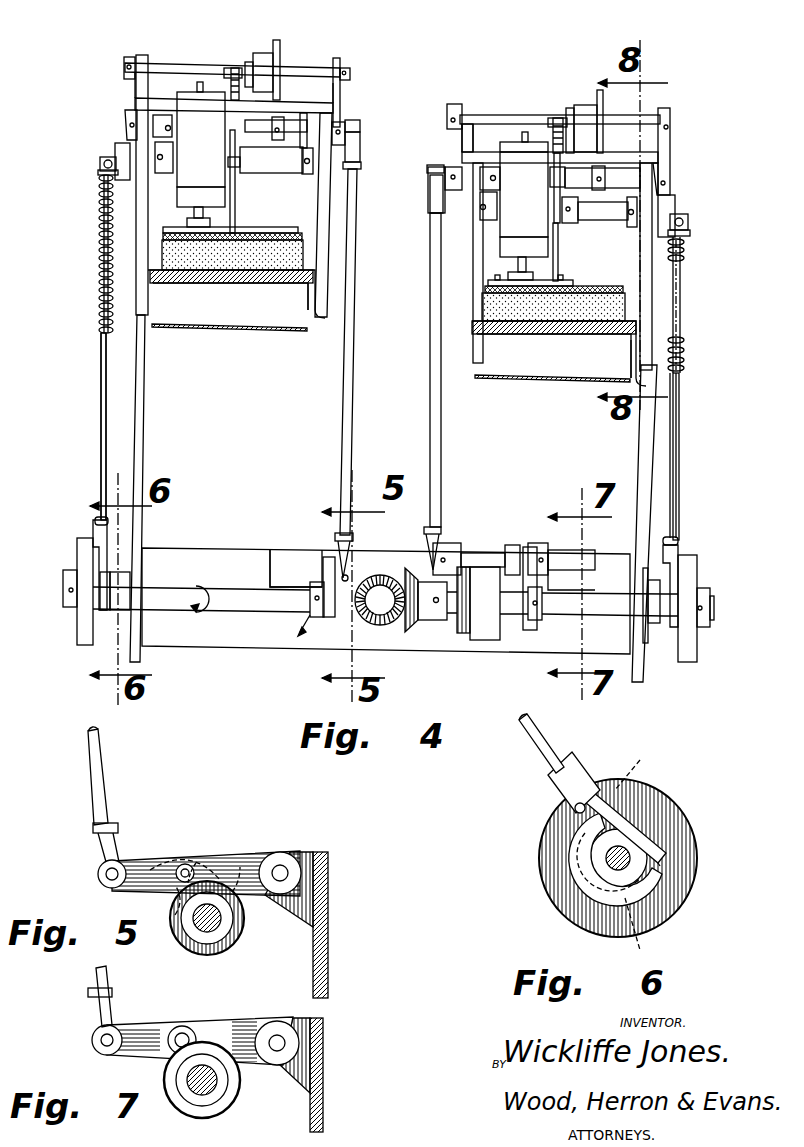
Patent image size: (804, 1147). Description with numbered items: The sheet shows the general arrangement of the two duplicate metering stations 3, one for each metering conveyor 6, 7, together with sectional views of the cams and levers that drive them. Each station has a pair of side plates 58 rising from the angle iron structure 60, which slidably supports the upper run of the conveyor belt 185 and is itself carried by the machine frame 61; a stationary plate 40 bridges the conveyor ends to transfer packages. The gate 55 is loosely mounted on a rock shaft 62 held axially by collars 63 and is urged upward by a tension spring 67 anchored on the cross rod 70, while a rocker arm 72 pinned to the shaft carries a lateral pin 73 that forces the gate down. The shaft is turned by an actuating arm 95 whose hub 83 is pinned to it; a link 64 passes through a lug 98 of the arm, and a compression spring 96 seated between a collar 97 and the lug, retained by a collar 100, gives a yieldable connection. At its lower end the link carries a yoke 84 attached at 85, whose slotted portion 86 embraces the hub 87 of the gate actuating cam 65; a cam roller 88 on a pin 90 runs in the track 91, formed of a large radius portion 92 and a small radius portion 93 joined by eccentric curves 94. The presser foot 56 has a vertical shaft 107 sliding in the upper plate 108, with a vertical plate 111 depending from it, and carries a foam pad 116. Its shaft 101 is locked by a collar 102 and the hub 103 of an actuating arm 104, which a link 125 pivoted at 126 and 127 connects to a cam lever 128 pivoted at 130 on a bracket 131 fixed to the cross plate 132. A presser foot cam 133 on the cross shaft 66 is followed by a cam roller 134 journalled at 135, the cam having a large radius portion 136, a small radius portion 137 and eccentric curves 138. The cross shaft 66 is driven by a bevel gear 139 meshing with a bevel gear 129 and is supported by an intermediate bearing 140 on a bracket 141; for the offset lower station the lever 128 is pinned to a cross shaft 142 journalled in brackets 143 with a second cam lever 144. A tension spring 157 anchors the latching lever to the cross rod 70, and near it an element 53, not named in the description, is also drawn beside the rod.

In FIG. 4, the metering station 3 is at (192, 62).
In FIG. 4, the metering conveyor 6 is at (263, 292).
In FIG. 4, the metering conveyor 7 is at (523, 342).
In FIG. 4, the stationary plate 40 is at (302, 262).
In FIG. 4, the cylinder 53 is at (272, 53).
In FIG. 4, the gate 55 is at (236, 215).
In FIG. 4, the presser foot 56 is at (497, 275).
In FIG. 4, the side plate 58 is at (142, 236).
In FIG. 4, the angle iron structure 60 is at (312, 310).
In FIG. 4, the frame 61 is at (148, 467).
In FIG. 4, the rock shaft 62 is at (598, 214).
In FIG. 4, the collar 63 is at (165, 173).
In FIG. 4, the link 64 is at (100, 400).
In FIG. 6, the link 64 is at (538, 723).
In FIG. 4, the gate actuating cam 65 is at (78, 633).
In FIG. 6, the gate actuating cam 65 is at (686, 903).
In FIG. 4, the cross shaft 66 is at (252, 600).
In FIG. 5, the cross shaft 66 is at (194, 932).
In FIG. 7, the cross shaft 66 is at (188, 1092).
In FIG. 6, the cross shaft 66 is at (662, 913).
In FIG. 4, the tension spring 67 is at (237, 65).
In FIG. 4, the cross rod 70 is at (301, 72).
In FIG. 4, the rocker arm 72 is at (564, 224).
In FIG. 4, the lateral pin 73 is at (228, 163).
In FIG. 4, the hub 83 is at (120, 146).
In FIG. 4, the yoke 84 is at (673, 570).
In FIG. 6, the yoke 84 is at (555, 797).
In FIG. 4, the attachment 85 is at (678, 547).
In FIG. 6, the attachment 85 is at (572, 760).
In FIG. 6, the slotted portion 86 is at (630, 810).
In FIG. 6, the hub 87 is at (648, 868).
In FIG. 6, the cam roller 88 is at (570, 850).
In FIG. 6, the pin 90 is at (575, 808).
In FIG. 6, the track 91 is at (582, 898).
In FIG. 6, the large radius portion 92 is at (570, 873).
In FIG. 6, the small radius portion 93 is at (655, 840).
In FIG. 6, the eccentric curve 94 is at (627, 854).
In FIG. 4, the actuating arm 95 is at (106, 152).
In FIG. 4, the compression spring 96 is at (100, 250).
In FIG. 4, the collar 97 is at (680, 375).
In FIG. 4, the lug 98 is at (98, 172).
In FIG. 4, the collar 100 is at (102, 163).
In FIG. 4, the shaft 101 is at (300, 128).
In FIG. 4, the collar 102 is at (128, 112).
In FIG. 4, the hub 103 is at (342, 117).
In FIG. 4, the actuating arm 104 is at (350, 125).
In FIG. 4, the vertical shaft 107 is at (195, 86).
In FIG. 4, the upper plate 108 is at (484, 154).
In FIG. 4, the vertical plate 111 is at (524, 206).
In FIG. 4, the pad 116 is at (302, 239).
In FIG. 4, the link 125 is at (350, 373).
In FIG. 5, the link 125 is at (103, 751).
In FIG. 7, the link 125 is at (96, 972).
In FIG. 4, the pivot connection 126 is at (360, 135).
In FIG. 4, the pivot connection 127 is at (352, 566).
In FIG. 5, the pivot connection 127 is at (98, 876).
In FIG. 7, the pivot connection 127 is at (92, 1041).
In FIG. 4, the cam lever 128 is at (333, 613).
In FIG. 5, the cam lever 128 is at (238, 860).
In FIG. 7, the cam lever 128 is at (144, 1037).
In FIG. 4, the bevel gear 129 is at (372, 630).
In FIG. 5, the pivot 130 is at (282, 867).
In FIG. 4, the bracket 131 is at (306, 548).
In FIG. 5, the bracket 131 is at (310, 854).
In FIG. 4, the cross plate 132 is at (285, 640).
In FIG. 5, the cross plate 132 is at (328, 942).
In FIG. 7, the cross plate 132 is at (320, 1067).
In FIG. 4, the presser foot cam 133 is at (310, 630).
In FIG. 5, the presser foot cam 133 is at (238, 934).
In FIG. 7, the presser foot cam 133 is at (230, 1111).
In FIG. 4, the cam roller 134 is at (321, 565).
In FIG. 5, the cam roller 134 is at (193, 860).
In FIG. 7, the cam roller 134 is at (186, 1027).
In FIG. 5, the journal 135 is at (184, 866).
In FIG. 7, the journal 135 is at (176, 1021).
In FIG. 5, the large radius portion 136 is at (244, 922).
In FIG. 7, the large radius portion 136 is at (242, 1089).
In FIG. 5, the small radius portion 137 is at (166, 910).
In FIG. 7, the small radius portion 137 is at (166, 1076).
In FIG. 5, the eccentric curve 138 is at (173, 933).
In FIG. 4, the bevel gear 139 is at (408, 634).
In FIG. 4, the intermediate bearing 140 is at (456, 621).
In FIG. 4, the bracket 141 is at (492, 630).
In FIG. 4, the cross shaft 142 is at (484, 556).
In FIG. 7, the cross shaft 142 is at (280, 1032).
In FIG. 4, the bracket 143 is at (458, 545).
In FIG. 7, the bracket 143 is at (305, 1086).
In FIG. 4, the cam lever 144 is at (516, 545).
In FIG. 7, the cam lever 144 is at (226, 1028).
In FIG. 4, the tension spring 157 is at (566, 108).
In FIG. 4, the conveyor belt 185 is at (204, 331).